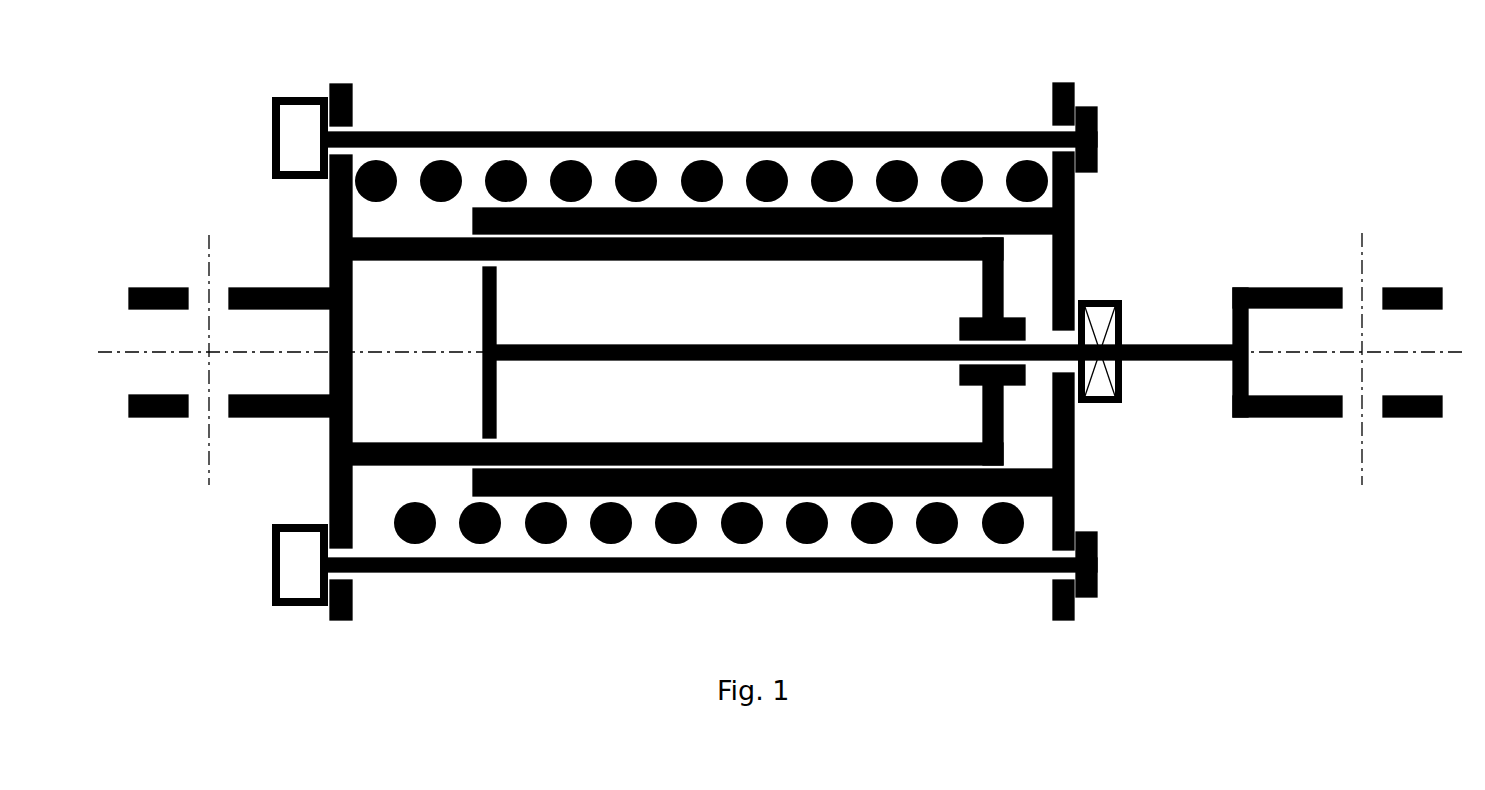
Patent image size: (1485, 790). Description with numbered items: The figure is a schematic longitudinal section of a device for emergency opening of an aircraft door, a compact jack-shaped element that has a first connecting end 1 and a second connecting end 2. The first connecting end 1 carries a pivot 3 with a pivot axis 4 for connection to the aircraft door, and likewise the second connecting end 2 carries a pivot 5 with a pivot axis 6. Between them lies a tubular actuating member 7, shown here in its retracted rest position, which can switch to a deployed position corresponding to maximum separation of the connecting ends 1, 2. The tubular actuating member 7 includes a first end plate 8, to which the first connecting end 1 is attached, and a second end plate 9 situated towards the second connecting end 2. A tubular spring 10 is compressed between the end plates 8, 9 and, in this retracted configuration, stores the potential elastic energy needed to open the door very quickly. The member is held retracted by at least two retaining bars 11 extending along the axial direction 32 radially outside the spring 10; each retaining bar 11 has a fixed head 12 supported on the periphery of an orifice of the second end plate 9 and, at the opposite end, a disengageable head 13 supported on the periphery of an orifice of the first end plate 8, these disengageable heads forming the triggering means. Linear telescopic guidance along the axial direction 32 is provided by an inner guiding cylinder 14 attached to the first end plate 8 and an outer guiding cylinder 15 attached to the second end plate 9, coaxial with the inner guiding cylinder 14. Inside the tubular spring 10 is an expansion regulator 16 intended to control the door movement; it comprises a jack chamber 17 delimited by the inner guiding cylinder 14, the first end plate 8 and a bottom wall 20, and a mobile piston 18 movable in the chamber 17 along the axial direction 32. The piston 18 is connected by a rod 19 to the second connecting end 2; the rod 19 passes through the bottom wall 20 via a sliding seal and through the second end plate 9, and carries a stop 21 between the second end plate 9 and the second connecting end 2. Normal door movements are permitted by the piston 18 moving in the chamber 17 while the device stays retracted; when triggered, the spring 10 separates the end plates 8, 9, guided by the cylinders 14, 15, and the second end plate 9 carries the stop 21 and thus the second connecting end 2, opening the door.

The first connecting end 1 is at (153, 288).
The second connecting end 2 is at (1403, 288).
The pivot 3 is at (190, 298).
The axis 4 is at (212, 257).
The pivot 5 is at (1342, 300).
The axis 6 is at (1365, 270).
The tubular actuating member 7 is at (1080, 95).
The first end plate 8 is at (328, 272).
The second end plate 9 is at (1074, 275).
The tubular spring 10 is at (638, 160).
The retaining bar 11 is at (813, 132).
The fixed head 12 is at (1097, 140).
The disengageable head 13 is at (285, 143).
The inner guiding cylinder 14 is at (658, 260).
The outer guiding cylinder 15 is at (540, 208).
The expansion regulator 16 is at (1010, 416).
The jack chamber 17 is at (797, 409).
The mobile piston 18 is at (496, 428).
The rod 19 is at (807, 345).
The bottom wall 20 is at (983, 417).
The stop 21 is at (1122, 372).
The axial direction 32 is at (117, 352).